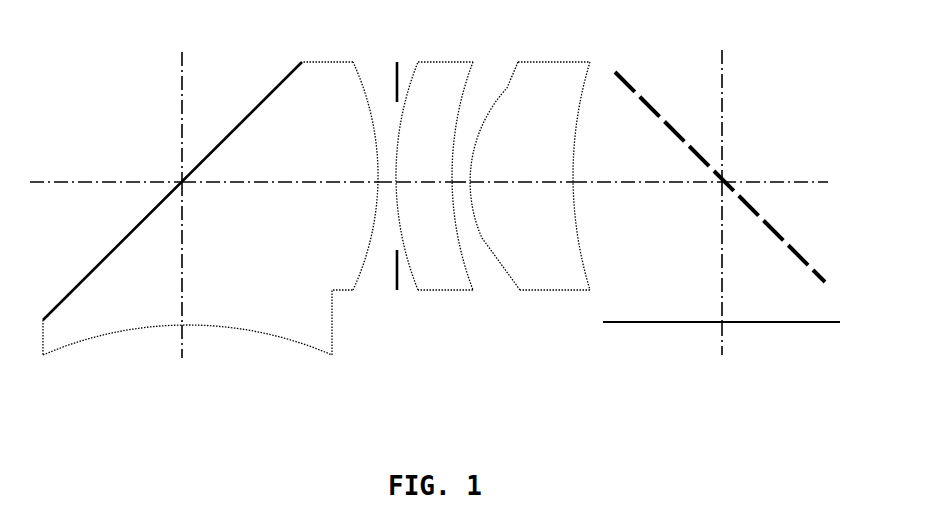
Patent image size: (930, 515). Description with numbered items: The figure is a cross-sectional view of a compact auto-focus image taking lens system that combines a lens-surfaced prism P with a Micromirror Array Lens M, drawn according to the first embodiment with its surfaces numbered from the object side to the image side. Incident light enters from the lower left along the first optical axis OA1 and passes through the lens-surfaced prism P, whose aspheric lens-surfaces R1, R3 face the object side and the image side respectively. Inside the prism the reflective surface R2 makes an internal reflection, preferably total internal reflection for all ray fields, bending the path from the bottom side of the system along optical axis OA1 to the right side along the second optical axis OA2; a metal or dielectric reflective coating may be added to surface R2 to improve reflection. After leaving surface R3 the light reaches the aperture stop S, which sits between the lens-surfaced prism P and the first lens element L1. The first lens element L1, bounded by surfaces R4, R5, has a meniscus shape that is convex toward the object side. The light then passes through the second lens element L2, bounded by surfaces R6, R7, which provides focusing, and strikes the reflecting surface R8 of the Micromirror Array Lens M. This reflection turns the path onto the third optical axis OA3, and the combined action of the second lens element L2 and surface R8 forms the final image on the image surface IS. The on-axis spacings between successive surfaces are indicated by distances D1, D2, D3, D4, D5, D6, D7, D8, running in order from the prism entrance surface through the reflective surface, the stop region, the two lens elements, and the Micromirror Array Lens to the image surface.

The lens-surfaced prism P is at (201, 232).
The lens-surface of the lens-surfaced prism R1 is at (123, 335).
The reflective surface of the lens-surfaced prism R2 is at (200, 157).
The lens-surface of the lens-surfaced prism R3 is at (373, 160).
The aperture stop S is at (397, 296).
The first lens element L1 is at (433, 206).
The surface of the first lens element R4 is at (413, 82).
The surface of the first lens element R5 is at (452, 165).
The second lens element L2 is at (554, 205).
The surface of the second lens element R6 is at (503, 88).
The surface of the second lens element R7 is at (578, 139).
The Micromirror Array Lens M is at (720, 168).
The surface of the Micromirror Array Lens R8 is at (750, 170).
The image surface IS is at (787, 332).
The optical axis OA1 is at (185, 340).
The optical axis OA2 is at (96, 184).
The optical axis OA3 is at (724, 352).
The on-axis surface spacing D1 is at (184, 260).
The on-axis surface spacing D2 is at (275, 184).
The on-axis surface spacing D3 is at (388, 184).
The on-axis surface spacing D4 is at (422, 184).
The on-axis surface spacing D5 is at (465, 184).
The on-axis surface spacing D6 is at (520, 184).
The on-axis surface spacing D7 is at (620, 184).
The on-axis surface spacing D8 is at (725, 258).